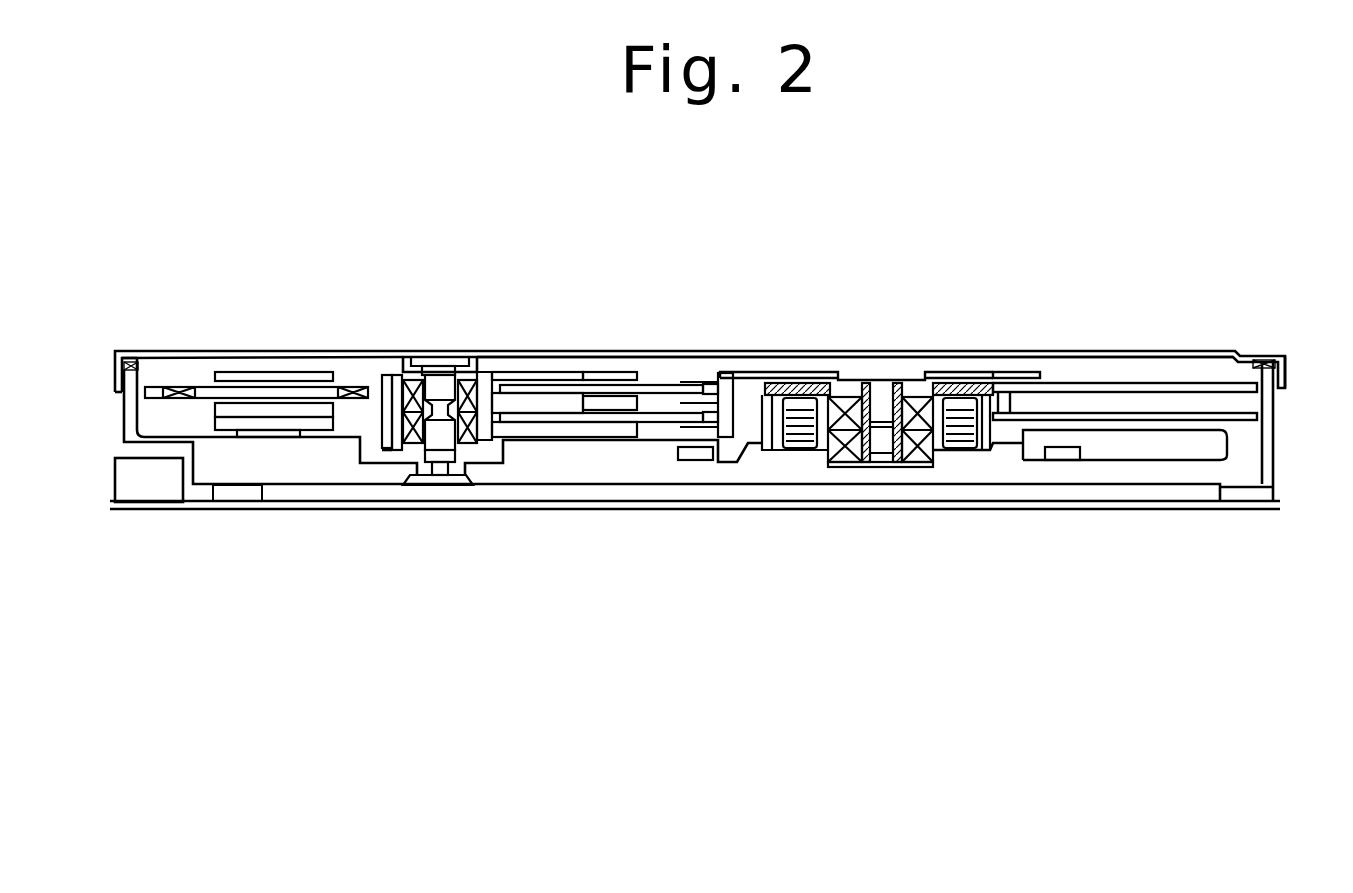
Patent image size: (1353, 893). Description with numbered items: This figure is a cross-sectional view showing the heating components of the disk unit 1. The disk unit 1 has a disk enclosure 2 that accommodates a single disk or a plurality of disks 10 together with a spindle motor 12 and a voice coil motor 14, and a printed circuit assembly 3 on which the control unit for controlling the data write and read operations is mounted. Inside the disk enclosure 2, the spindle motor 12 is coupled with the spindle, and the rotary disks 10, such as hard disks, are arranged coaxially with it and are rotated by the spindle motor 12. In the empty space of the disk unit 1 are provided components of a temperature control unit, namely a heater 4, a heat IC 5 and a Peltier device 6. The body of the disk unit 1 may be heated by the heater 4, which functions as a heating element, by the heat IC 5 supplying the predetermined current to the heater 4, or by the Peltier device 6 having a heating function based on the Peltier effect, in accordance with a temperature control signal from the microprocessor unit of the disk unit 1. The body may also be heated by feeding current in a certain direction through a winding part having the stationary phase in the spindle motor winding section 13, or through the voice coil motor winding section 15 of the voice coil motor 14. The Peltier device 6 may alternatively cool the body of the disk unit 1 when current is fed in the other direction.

The disk unit 1 is at (246, 330).
The disk enclosure 2 is at (1292, 366).
The printed circuit assembly 3 is at (245, 513).
The heater 4 is at (527, 463).
The heat IC 5 is at (707, 466).
The Peltier device 6 is at (1165, 463).
The disk 10 is at (1160, 416).
The spindle motor 12 is at (905, 388).
The spindle motor winding section 13 is at (960, 394).
The voice coil motor 14 is at (398, 365).
The voice coil motor winding section 15 is at (297, 383).